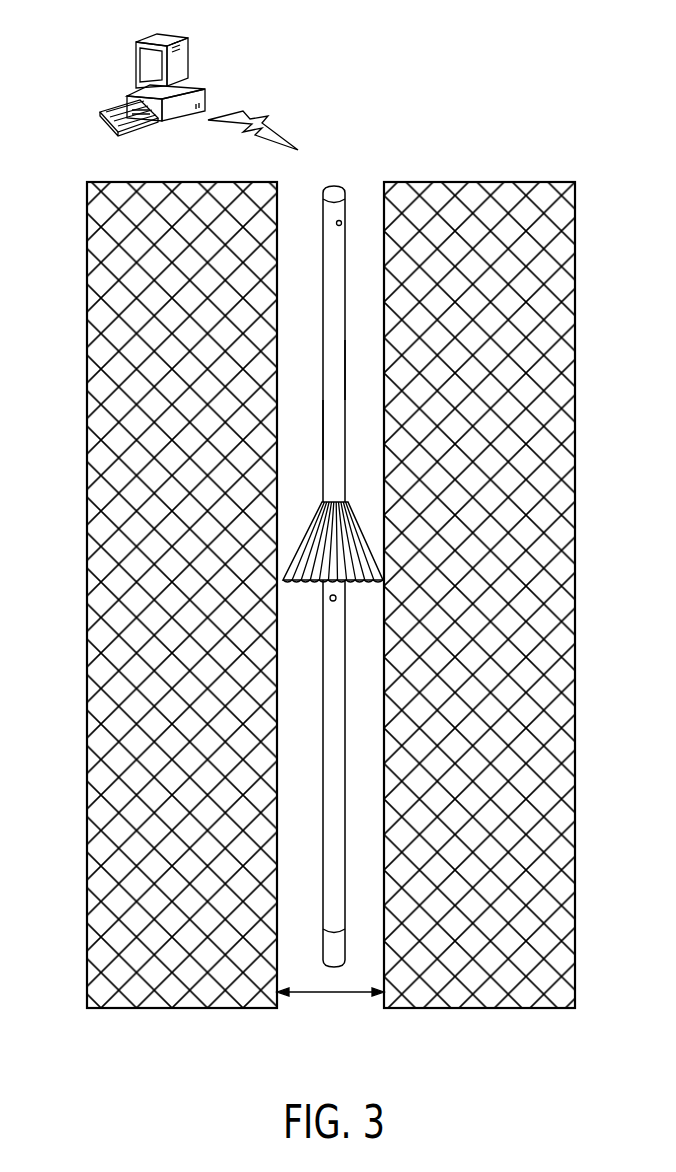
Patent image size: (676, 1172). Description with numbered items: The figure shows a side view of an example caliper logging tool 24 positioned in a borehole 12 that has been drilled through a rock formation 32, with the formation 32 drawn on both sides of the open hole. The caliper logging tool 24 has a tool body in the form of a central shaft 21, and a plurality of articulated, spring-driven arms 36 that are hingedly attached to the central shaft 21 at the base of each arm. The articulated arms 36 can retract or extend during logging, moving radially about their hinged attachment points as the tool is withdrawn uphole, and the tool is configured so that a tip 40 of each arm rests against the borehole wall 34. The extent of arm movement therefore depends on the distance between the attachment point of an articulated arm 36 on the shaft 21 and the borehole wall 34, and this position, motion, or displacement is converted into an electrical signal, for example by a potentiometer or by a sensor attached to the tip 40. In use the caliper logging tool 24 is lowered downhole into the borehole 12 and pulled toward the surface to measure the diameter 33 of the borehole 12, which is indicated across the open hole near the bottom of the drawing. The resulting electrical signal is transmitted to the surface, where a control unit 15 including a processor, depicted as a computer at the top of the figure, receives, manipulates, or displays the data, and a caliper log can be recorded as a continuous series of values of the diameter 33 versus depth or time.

The borehole 12 is at (371, 188).
The control unit 15 is at (133, 62).
The central shaft 21 is at (322, 430).
The caliper logging tool 24 is at (355, 373).
The rock formation 32 is at (100, 222).
The diameter of the borehole 33 is at (332, 994).
The borehole wall 34 is at (388, 720).
The articulated arms 36 is at (300, 535).
The tip 40 is at (367, 583).